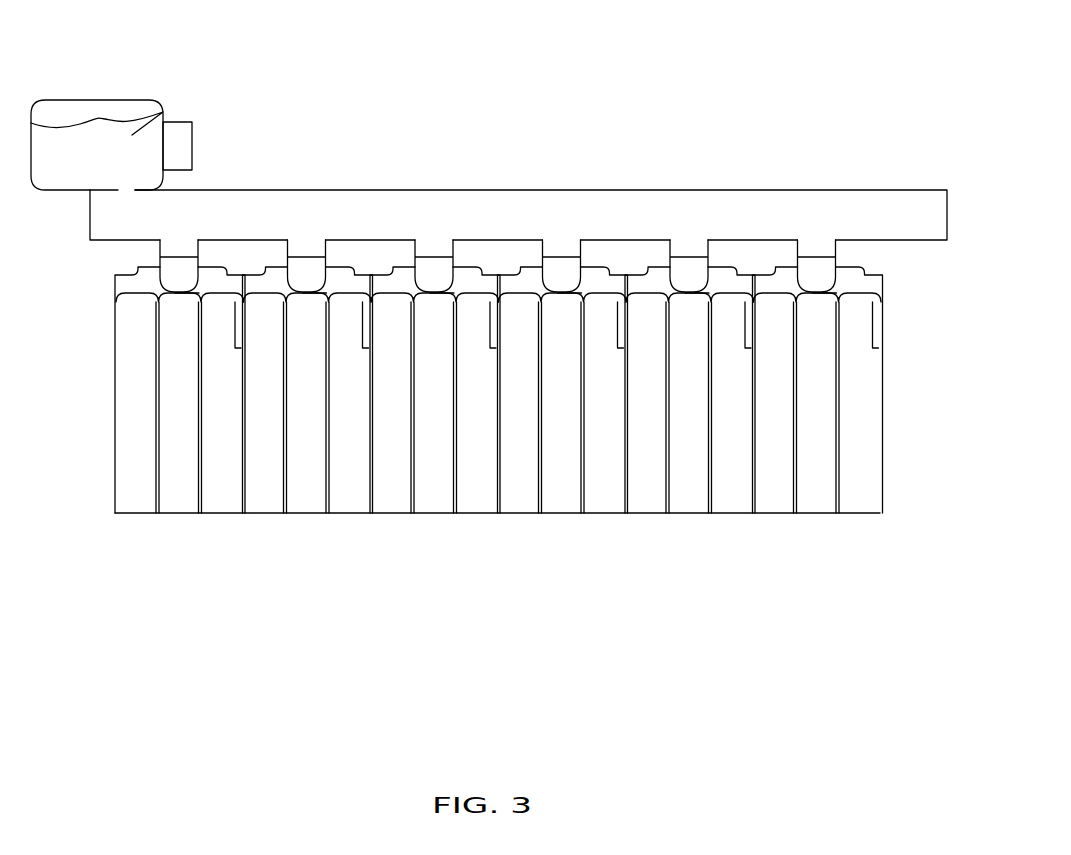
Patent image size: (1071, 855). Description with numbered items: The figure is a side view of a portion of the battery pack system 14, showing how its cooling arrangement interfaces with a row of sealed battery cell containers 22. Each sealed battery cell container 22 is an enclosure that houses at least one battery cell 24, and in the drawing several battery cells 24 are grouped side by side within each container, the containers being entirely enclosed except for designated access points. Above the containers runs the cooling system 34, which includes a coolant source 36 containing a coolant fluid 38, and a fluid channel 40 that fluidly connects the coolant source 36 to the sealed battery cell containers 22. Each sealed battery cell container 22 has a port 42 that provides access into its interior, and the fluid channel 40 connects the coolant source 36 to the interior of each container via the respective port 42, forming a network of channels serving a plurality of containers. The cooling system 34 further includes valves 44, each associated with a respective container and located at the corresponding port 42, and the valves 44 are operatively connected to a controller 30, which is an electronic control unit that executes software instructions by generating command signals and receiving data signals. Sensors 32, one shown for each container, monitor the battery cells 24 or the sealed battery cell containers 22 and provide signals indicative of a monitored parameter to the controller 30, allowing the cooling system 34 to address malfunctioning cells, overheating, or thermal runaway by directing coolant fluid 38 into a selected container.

The battery pack system 14 is at (504, 330).
The sealed battery cell container 22 is at (118, 513).
The battery cell 24 is at (132, 503).
The controller 30 is at (192, 130).
The sensor 32 is at (543, 343).
The cooling system 34 is at (518, 186).
The coolant source 36 is at (118, 100).
The coolant fluid 38 is at (163, 112).
The fluid channel 40 is at (483, 208).
The port 42 is at (478, 287).
The valve 44 is at (487, 250).